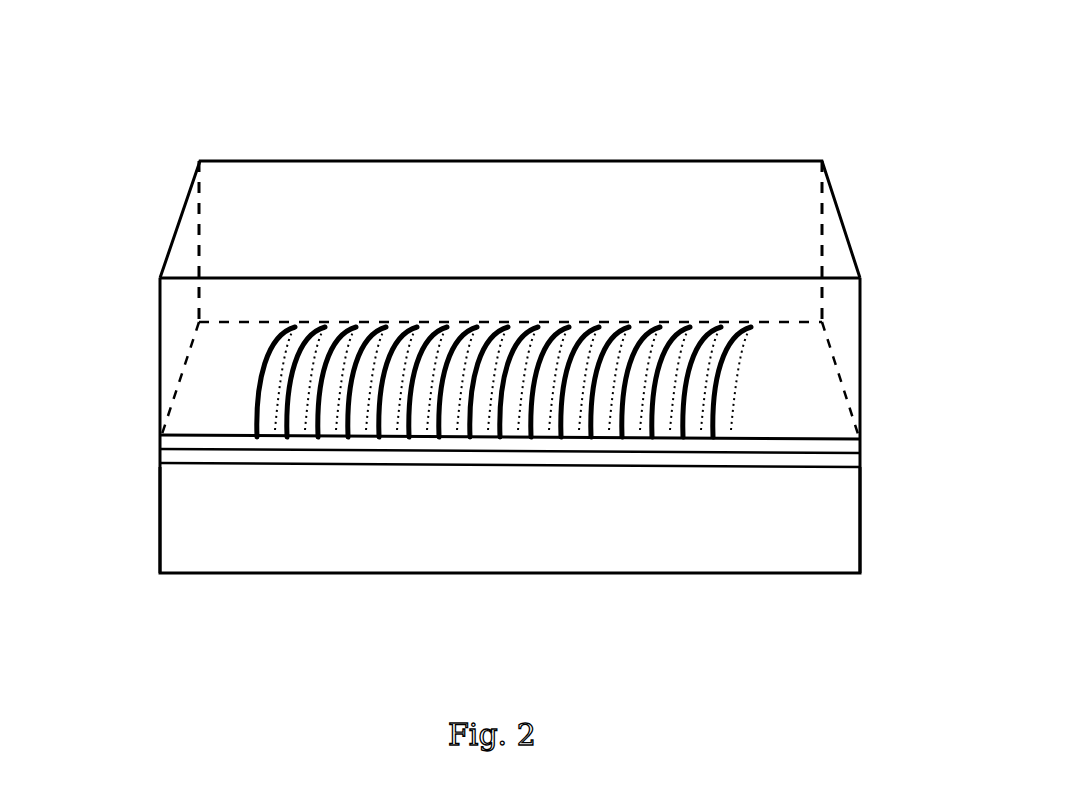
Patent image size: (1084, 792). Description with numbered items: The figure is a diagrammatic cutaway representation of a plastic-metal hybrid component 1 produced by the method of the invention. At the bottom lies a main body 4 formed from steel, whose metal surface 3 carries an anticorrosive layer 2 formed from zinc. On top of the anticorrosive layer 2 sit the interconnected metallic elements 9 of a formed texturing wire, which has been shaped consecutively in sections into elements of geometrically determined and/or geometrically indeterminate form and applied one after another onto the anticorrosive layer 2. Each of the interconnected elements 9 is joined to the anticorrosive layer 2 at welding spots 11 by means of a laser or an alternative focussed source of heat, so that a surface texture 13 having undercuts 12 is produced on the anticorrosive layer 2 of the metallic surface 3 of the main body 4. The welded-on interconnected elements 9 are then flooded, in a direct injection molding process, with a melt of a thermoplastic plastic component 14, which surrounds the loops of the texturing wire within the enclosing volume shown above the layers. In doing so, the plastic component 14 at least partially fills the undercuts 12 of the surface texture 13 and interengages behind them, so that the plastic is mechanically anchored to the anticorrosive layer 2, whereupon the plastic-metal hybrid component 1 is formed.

The plastic-metal hybrid component 1 is at (897, 388).
The anticorrosive layer 2 is at (830, 458).
The metal surface 3 is at (177, 460).
The main body 4 is at (828, 540).
The interconnected metallic elements 9 is at (479, 365).
The welding spots 11 is at (262, 435).
The undercuts 12 is at (487, 327).
The surface texture 13 is at (548, 327).
The thermoplastic plastic component 14 is at (215, 373).